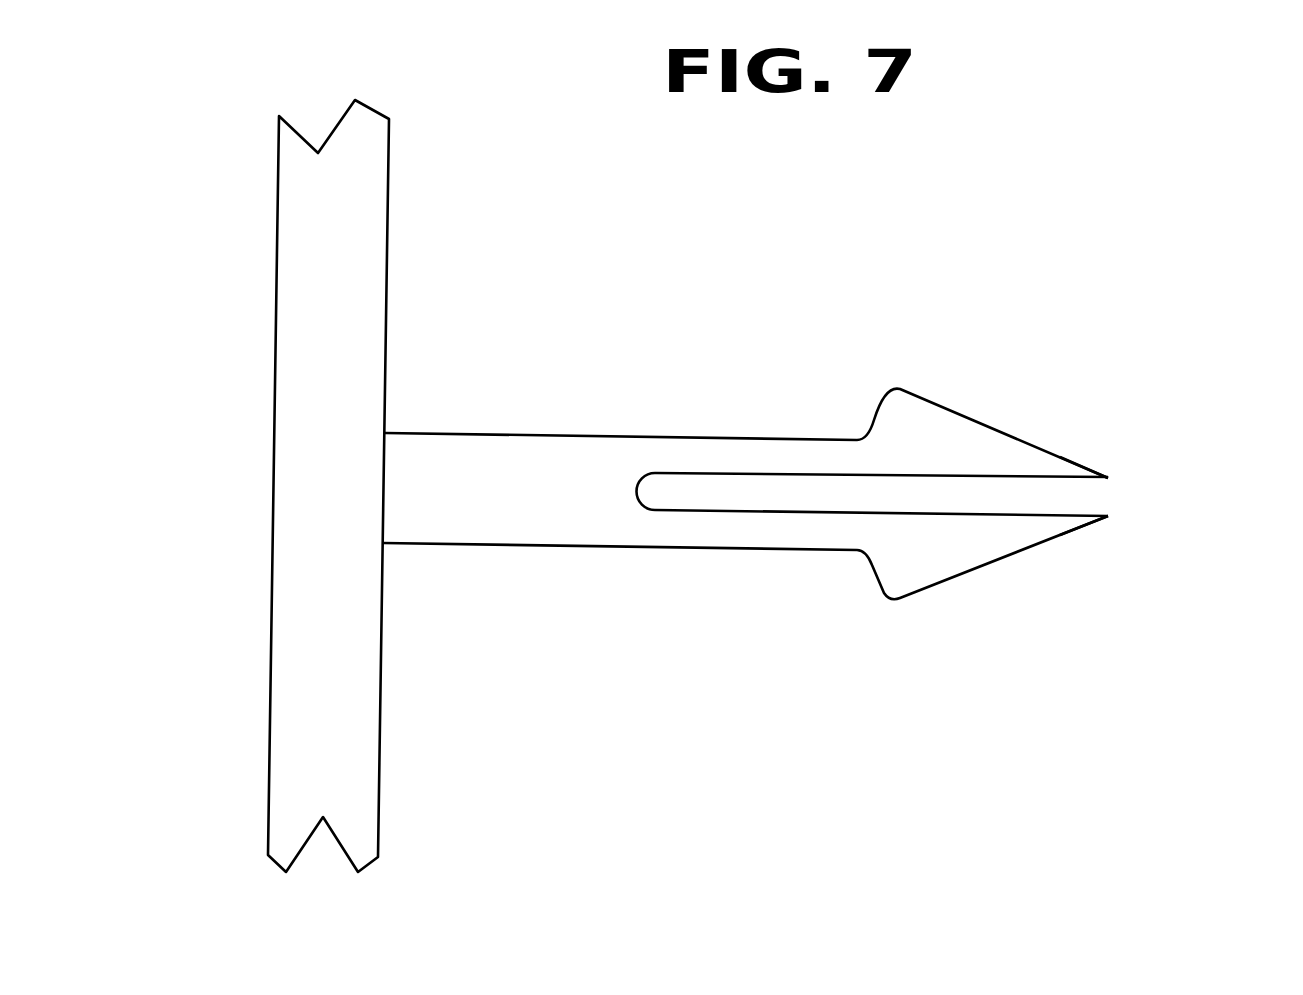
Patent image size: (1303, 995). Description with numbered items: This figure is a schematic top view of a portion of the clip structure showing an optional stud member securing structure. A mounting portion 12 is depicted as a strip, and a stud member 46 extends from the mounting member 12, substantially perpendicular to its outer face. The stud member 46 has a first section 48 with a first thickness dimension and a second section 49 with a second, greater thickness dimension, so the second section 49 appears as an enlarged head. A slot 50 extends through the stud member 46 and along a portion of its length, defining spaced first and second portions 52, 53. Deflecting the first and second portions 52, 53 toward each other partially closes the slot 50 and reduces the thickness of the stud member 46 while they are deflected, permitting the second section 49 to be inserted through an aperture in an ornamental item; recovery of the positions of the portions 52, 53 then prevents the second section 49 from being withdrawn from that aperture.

The mounting portion 12 is at (312, 310).
The stud member 46 is at (446, 457).
The first section 48 is at (565, 468).
The second section 49 is at (1010, 457).
The slot 50 is at (1087, 500).
The first portion 52 is at (925, 542).
The second portion 53 is at (930, 432).